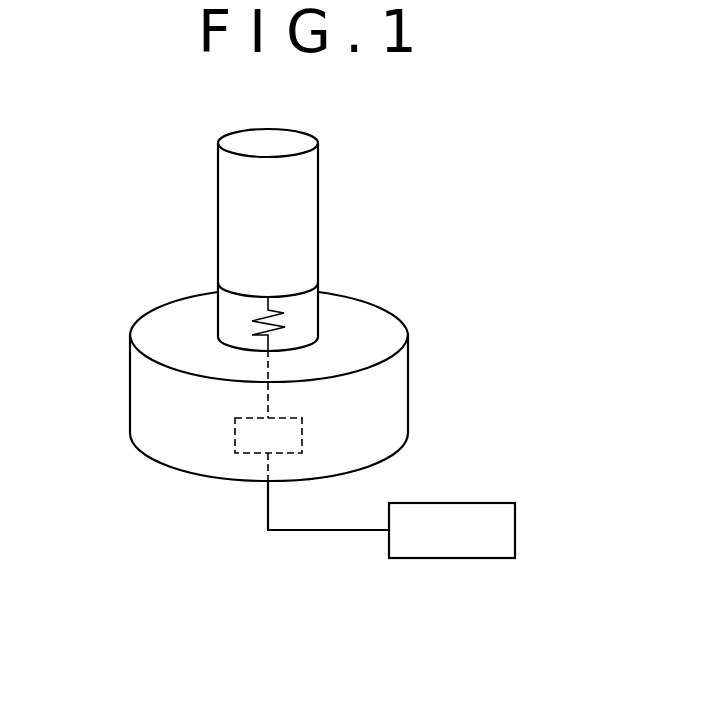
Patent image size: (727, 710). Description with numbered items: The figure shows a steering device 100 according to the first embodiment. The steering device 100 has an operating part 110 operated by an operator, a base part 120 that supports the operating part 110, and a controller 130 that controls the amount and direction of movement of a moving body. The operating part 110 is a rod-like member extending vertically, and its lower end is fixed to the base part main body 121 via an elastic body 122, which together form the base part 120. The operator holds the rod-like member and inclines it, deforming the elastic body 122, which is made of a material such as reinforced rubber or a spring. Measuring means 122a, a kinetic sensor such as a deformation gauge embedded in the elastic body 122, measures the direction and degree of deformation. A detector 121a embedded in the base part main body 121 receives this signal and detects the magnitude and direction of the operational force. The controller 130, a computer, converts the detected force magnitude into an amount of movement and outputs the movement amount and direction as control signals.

The steering device 100 is at (319, 308).
The operating part 110 is at (233, 207).
The base part 120 is at (319, 397).
The base part main body 121 is at (290, 403).
The detector 121a is at (237, 434).
The elastic body 122 is at (274, 328).
The measuring means 122a is at (250, 322).
The controller 130 is at (515, 527).